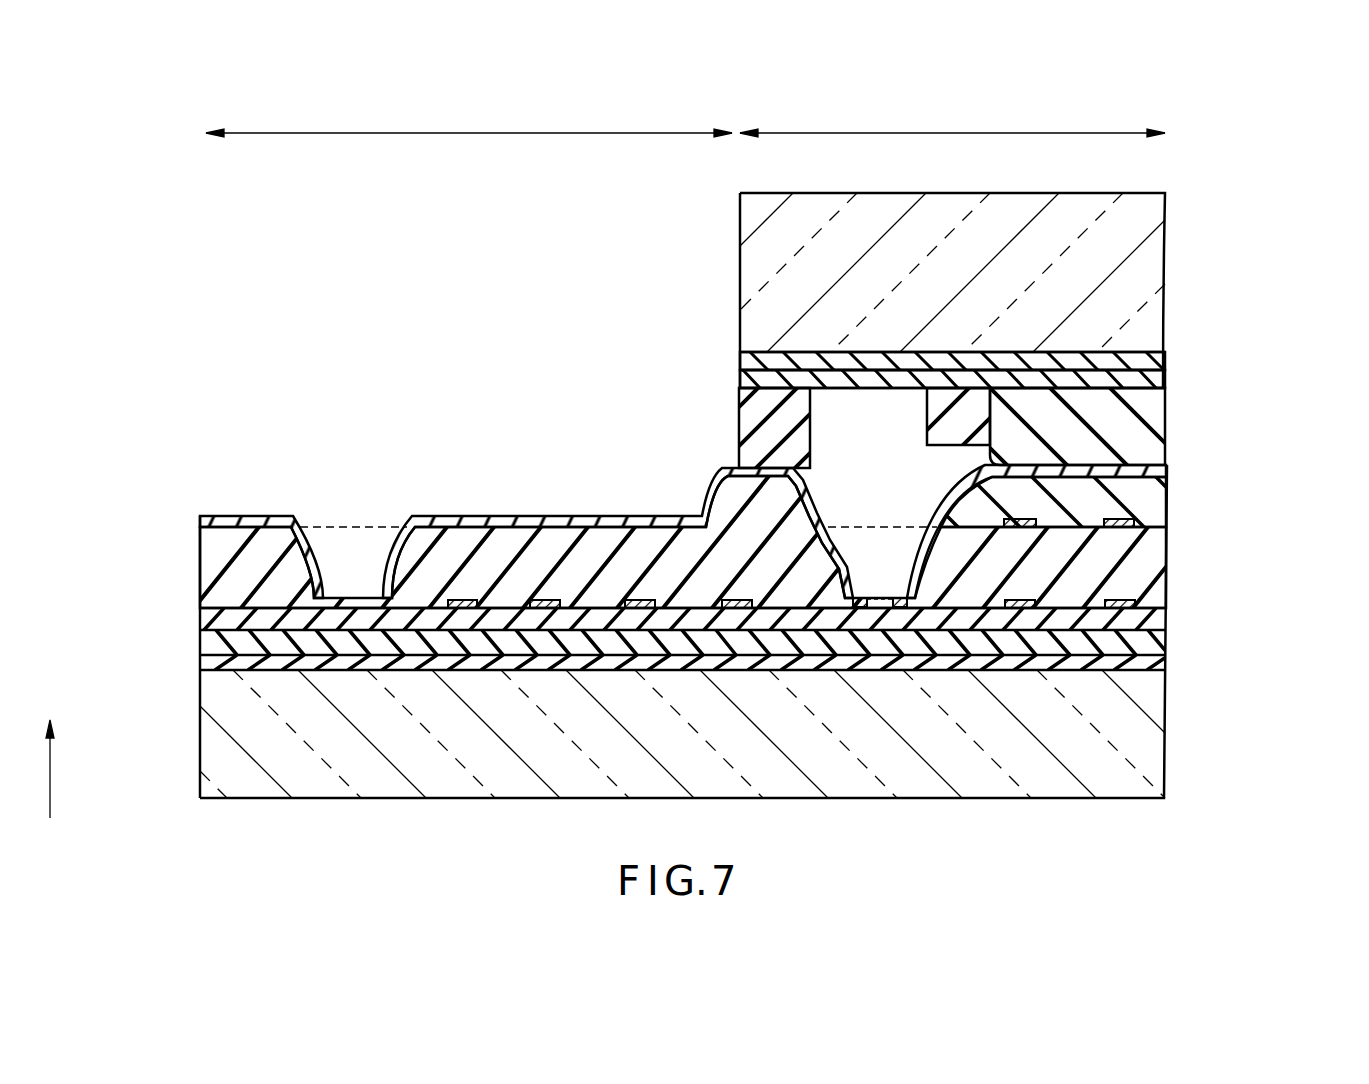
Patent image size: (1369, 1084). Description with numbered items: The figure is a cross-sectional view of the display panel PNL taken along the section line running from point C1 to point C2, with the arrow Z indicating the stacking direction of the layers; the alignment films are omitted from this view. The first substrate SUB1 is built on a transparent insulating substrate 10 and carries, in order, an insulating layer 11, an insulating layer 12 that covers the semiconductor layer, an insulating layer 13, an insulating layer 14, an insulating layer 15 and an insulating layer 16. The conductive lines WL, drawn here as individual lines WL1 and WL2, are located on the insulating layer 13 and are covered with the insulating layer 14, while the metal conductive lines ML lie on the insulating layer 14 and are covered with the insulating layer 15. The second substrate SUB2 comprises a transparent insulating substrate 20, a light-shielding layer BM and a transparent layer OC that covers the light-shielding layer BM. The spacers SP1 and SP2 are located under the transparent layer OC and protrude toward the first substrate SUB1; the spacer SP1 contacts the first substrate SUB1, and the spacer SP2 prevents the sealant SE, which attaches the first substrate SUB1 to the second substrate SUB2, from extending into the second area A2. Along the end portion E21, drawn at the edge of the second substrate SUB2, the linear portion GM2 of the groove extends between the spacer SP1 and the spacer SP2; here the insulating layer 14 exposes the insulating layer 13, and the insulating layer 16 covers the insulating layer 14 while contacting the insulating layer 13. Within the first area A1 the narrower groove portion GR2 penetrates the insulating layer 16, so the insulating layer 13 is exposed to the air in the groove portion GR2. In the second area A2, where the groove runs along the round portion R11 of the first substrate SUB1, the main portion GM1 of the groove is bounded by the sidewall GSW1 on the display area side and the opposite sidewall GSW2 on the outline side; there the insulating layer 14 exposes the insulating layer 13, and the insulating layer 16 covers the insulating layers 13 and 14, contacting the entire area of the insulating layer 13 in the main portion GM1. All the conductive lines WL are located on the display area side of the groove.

The display panel PNL is at (728, 490).
The first substrate SUB1 is at (728, 597).
The second substrate SUB2 is at (995, 343).
The insulating substrate 10 is at (1145, 711).
The insulating layer 11 is at (1153, 667).
The insulating layer 12 is at (1155, 648).
The insulating layer 13 is at (1158, 621).
The insulating layer 14 is at (1158, 581).
The insulating layer 15 is at (1135, 491).
The insulating layer 16 is at (1135, 468).
The insulating substrate 20 is at (1158, 275).
The light-shielding layer BM is at (1155, 362).
The transparent layer OC is at (1140, 382).
The sealant SE is at (1148, 428).
The spacer SP1 is at (744, 412).
The spacer SP2 is at (930, 412).
The end portion E21 is at (720, 248).
The round portion R11 is at (182, 686).
The main portion GM1 is at (618, 461).
The linear portion GM2 is at (860, 510).
The groove portion GR2 is at (877, 577).
The sidewall GSW1 is at (384, 566).
The sidewall GSW2 is at (332, 564).
The conductive lines WL is at (600, 517).
The first wiring line WL1 is at (464, 598).
The second wiring line WL2 is at (640, 598).
The metal conductive line ML is at (1123, 524).
The first area A1 is at (952, 117).
The second area A2 is at (469, 117).
The C1-C2 line C1 is at (200, 834).
The C1-C2 line C2 is at (1165, 834).
The Z direction Z is at (51, 753).